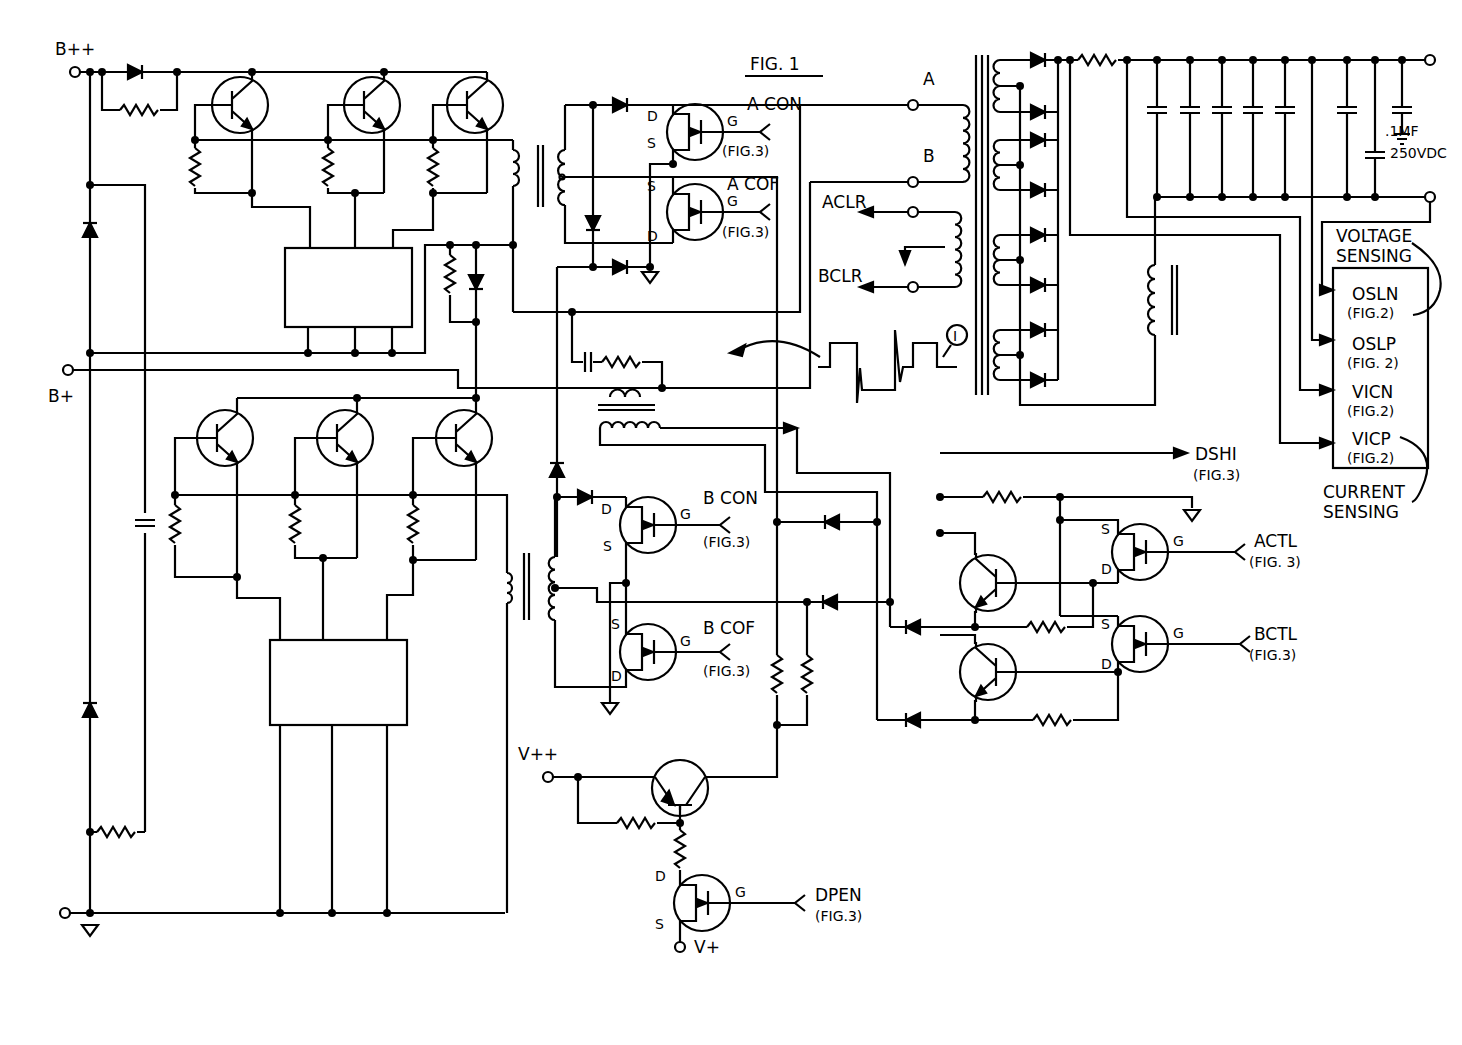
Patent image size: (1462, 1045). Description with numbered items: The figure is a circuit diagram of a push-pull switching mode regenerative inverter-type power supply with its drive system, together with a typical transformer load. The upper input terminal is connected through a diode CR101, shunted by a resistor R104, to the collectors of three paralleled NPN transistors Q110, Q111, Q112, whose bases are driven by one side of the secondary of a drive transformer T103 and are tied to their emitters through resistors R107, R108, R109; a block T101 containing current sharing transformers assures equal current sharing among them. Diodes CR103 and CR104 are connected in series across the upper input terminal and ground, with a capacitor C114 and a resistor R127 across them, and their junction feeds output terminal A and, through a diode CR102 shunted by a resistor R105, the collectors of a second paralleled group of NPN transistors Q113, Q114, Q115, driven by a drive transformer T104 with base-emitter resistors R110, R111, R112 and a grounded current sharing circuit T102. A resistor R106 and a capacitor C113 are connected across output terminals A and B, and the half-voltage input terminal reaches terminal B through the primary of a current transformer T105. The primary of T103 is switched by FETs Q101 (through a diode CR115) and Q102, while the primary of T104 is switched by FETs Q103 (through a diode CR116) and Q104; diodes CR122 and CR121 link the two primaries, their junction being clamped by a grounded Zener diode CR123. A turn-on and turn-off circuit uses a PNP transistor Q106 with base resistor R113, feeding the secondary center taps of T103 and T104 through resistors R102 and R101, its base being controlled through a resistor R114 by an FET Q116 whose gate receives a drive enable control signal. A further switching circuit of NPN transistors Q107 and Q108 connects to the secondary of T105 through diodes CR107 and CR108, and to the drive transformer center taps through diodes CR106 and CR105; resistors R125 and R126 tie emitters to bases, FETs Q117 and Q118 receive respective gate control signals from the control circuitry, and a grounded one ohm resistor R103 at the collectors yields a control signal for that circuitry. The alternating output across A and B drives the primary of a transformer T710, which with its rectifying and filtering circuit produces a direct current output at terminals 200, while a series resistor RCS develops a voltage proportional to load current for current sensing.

The diode CR101 is at (128, 66).
The NPN transistor Q110 is at (232, 82).
The NPN transistor Q111 is at (352, 82).
The NPN transistor Q112 is at (488, 80).
The resistor R104 is at (147, 114).
The resistor R107 is at (190, 166).
The resistor R108 is at (324, 166).
The resistor R109 is at (430, 167).
The resistor R105 is at (455, 262).
The diode CR102 is at (483, 295).
The diode CR103 is at (100, 232).
The current sharing transformer circuit T101 is at (348, 287).
The drive transformer T103 is at (532, 150).
The diode CR115 is at (612, 100).
The field effect transistor Q101 is at (717, 90).
The diode CR122 is at (618, 205).
The field effect transistor Q102 is at (717, 258).
The Zener diode CR123 is at (627, 278).
The capacitor C113 is at (588, 353).
The resistor R106 is at (616, 357).
The capacitor C114 is at (131, 515).
The NPN transistor Q113 is at (214, 414).
The NPN transistor Q114 is at (331, 423).
The NPN transistor Q115 is at (446, 423).
The resistor R110 is at (186, 533).
The resistor R111 is at (292, 523).
The resistor R112 is at (411, 523).
The current sharing transformer circuit T102 is at (338, 682).
The diode CR121 is at (562, 465).
The diode CR116 is at (586, 490).
The field effect transistor Q103 is at (648, 498).
The drive transformer T104 is at (522, 561).
The field effect transistor Q104 is at (662, 677).
The resistor R102 is at (772, 693).
The resistor R101 is at (812, 692).
The PNP transistor Q106 is at (690, 776).
The resistor R113 is at (641, 831).
The resistor R114 is at (688, 858).
The field effect transistor Q116 is at (716, 883).
The diode CR104 is at (103, 708).
The resistor R127 is at (116, 839).
The diode CR106 is at (846, 530).
The diode CR105 is at (846, 578).
The diode CR107 is at (898, 633).
The diode CR108 is at (901, 728).
The resistor R103 is at (1016, 476).
The NPN transistor Q107 is at (1031, 536).
The NPN transistor Q108 is at (1012, 680).
The field effect transistor Q117 is at (1146, 527).
The field effect transistor Q118 is at (1151, 625).
The resistor R125 is at (1031, 635).
The resistor R126 is at (1046, 728).
The current transformer T105 is at (664, 412).
The transformer T710 is at (956, 392).
The series resistor RCS is at (1113, 68).
The output terminals 200 is at (1426, 64).